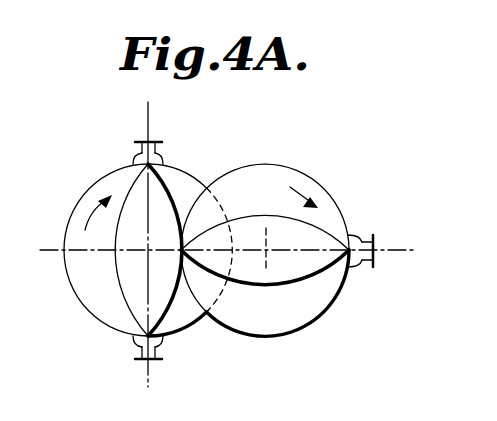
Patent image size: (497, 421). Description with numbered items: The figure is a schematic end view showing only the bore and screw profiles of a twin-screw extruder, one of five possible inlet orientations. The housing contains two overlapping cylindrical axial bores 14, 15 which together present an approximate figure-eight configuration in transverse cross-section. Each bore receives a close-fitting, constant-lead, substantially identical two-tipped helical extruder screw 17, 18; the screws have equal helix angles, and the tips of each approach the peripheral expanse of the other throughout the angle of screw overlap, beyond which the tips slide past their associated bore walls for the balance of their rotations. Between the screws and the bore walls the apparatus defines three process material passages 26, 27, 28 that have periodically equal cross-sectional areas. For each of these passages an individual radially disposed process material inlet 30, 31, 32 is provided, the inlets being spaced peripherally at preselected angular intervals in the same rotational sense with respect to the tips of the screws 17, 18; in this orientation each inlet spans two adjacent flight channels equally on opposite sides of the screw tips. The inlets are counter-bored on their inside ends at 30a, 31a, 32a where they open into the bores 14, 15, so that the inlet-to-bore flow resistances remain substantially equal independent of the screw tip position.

The cylindrical axial bore 14 is at (103, 182).
The cylindrical axial bore 15 is at (302, 168).
The two-tipped helical extruder screw 17 is at (155, 200).
The two-tipped helical extruder screw 18 is at (301, 270).
The process material passage 26 is at (93, 293).
The process material passage 27 is at (267, 320).
The process material passage 28 is at (322, 197).
The process material inlet 30 is at (137, 144).
The counter-bore 30a is at (162, 156).
The process material inlet 31 is at (140, 350).
The counter-bore 31a is at (163, 343).
The process material inlet 32 is at (368, 237).
The counter-bore 32a is at (350, 267).